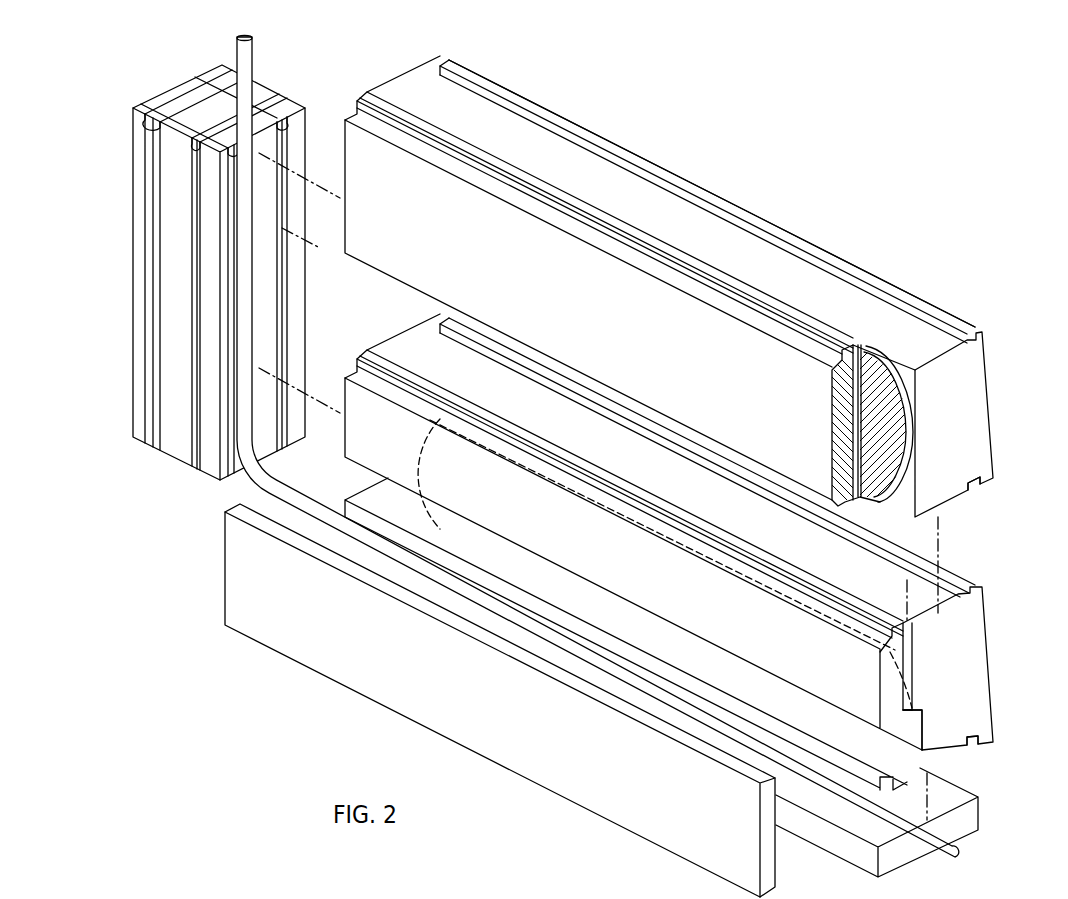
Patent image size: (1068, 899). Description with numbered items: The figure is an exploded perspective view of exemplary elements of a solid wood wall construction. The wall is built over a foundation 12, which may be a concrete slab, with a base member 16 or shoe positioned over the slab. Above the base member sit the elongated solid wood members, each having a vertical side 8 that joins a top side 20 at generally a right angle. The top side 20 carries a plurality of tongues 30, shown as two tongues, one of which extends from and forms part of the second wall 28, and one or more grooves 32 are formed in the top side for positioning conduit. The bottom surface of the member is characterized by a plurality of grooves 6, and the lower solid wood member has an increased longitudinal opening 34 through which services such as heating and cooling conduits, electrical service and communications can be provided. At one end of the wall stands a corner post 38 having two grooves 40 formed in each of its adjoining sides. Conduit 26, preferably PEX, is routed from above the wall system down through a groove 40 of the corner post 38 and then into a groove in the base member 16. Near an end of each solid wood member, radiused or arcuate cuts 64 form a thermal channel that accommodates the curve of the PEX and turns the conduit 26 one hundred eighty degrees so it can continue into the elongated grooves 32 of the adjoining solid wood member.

The grooves 6 is at (858, 490).
The vertical side 8 is at (576, 312).
The foundation 12 is at (525, 725).
The base member 16 is at (965, 815).
The top side 20 is at (790, 272).
The conduit 26 is at (940, 836).
The second wall 28 is at (990, 415).
The tongues 30 is at (808, 320).
The grooves 32 is at (865, 352).
The longitudinal opening 34 is at (925, 735).
The corner post 38 is at (133, 283).
The grooves 40 is at (150, 207).
The arcuate cuts 64 is at (905, 455).